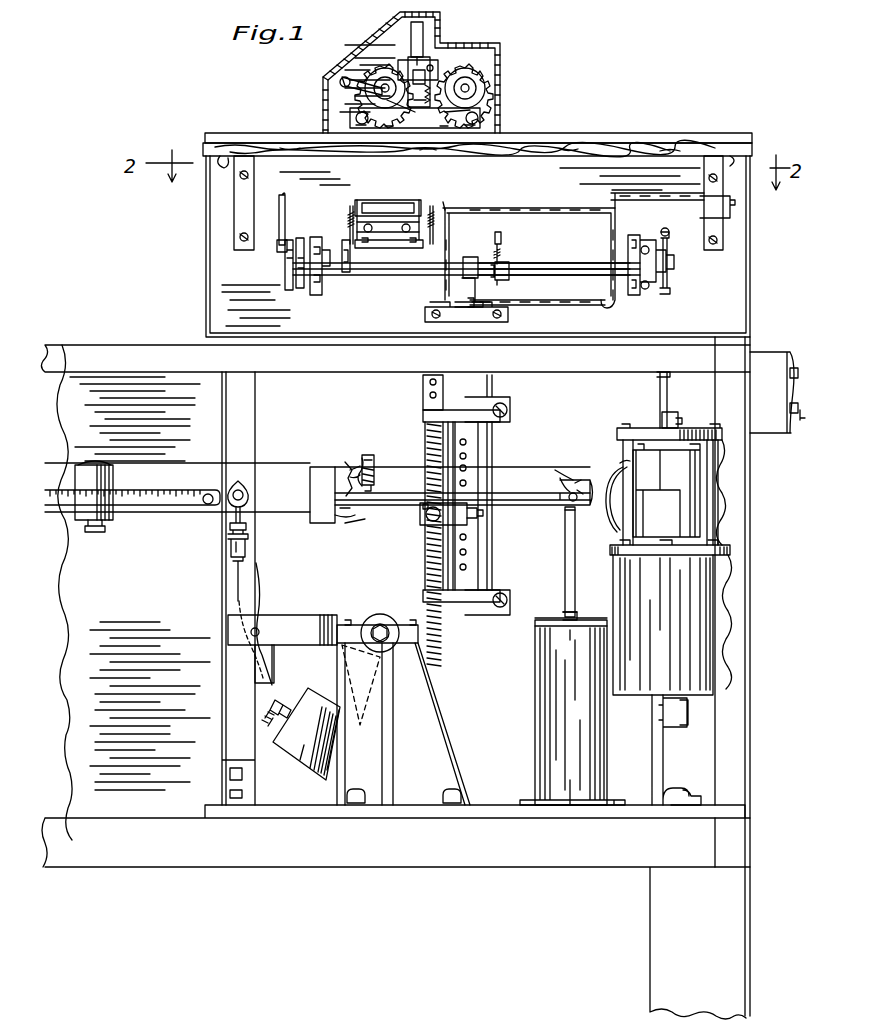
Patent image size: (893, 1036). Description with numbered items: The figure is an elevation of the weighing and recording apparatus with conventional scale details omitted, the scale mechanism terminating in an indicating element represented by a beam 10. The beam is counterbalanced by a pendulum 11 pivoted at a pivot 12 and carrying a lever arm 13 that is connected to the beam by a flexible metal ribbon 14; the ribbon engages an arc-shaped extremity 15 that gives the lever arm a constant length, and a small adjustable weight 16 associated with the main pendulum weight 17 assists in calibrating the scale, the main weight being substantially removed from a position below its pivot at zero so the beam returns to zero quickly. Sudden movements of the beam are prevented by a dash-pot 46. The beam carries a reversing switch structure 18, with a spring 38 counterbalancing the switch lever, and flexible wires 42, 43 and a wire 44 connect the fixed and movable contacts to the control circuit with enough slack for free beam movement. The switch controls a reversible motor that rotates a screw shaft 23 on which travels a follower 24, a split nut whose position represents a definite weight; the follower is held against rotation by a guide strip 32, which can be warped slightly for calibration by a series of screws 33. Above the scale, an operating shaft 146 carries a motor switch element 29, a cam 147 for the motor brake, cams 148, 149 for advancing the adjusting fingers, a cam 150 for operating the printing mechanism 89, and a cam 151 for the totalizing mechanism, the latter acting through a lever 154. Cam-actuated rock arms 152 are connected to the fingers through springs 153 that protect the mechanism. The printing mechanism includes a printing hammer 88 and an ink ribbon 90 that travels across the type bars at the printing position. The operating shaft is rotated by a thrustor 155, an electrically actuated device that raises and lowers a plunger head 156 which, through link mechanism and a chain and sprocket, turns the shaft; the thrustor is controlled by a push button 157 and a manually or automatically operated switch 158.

The beam 10 is at (200, 512).
The pendulum 11 is at (345, 680).
The pivot 12 is at (381, 620).
The lever arm 13 is at (295, 607).
The flexible metal ribbon 14 is at (246, 584).
The arc-shaped extremity 15 is at (252, 585).
The adjustable weight 16 is at (275, 712).
The main pendulum weight 17 is at (306, 734).
The switch structure 18 is at (325, 522).
The screw shaft 23 is at (423, 405).
The follower 24 is at (420, 520).
The motor switch element 29 is at (476, 256).
The guide strip 32 is at (457, 433).
The screws 33 is at (465, 455).
The spring 38 is at (378, 482).
The flexible wire 42 is at (362, 518).
The flexible wire 43 is at (348, 462).
The wire 44 is at (360, 465).
The dash-pot 46 is at (572, 657).
The printing hammer 88 is at (452, 62).
The printing mechanism 89 is at (491, 67).
The ribbon 90 is at (478, 110).
The operating shaft 146 is at (588, 267).
The cam 147 is at (503, 262).
The cam 148 is at (430, 277).
The cam 149 is at (343, 247).
The cam 150 is at (318, 280).
The cam 151 is at (290, 258).
The rock arms 152 is at (438, 230).
The springs 153 is at (428, 207).
The lever 154 is at (275, 212).
The thrustor 155 is at (669, 614).
The plunger head 156 is at (676, 418).
The push button 157 is at (800, 420).
The switch 158 is at (774, 392).